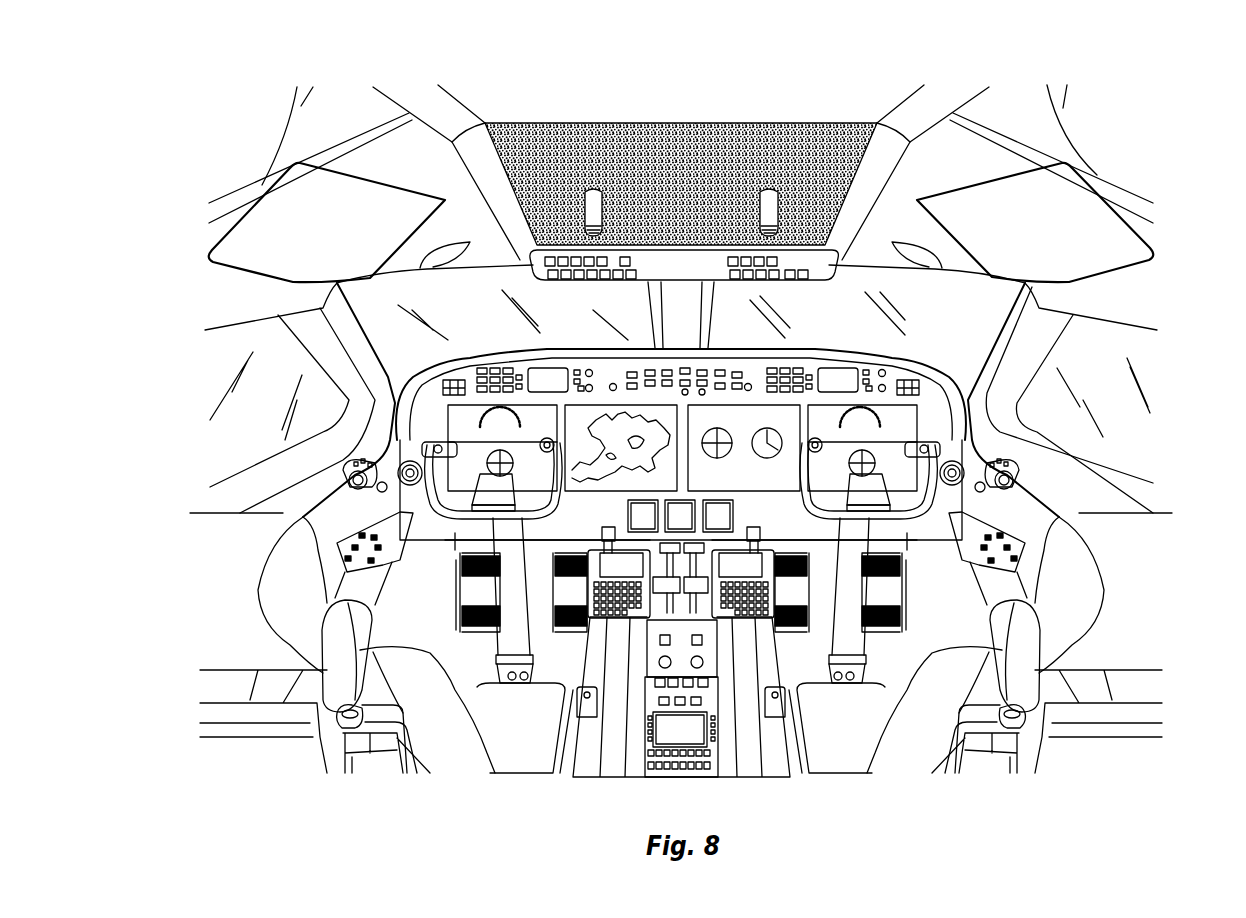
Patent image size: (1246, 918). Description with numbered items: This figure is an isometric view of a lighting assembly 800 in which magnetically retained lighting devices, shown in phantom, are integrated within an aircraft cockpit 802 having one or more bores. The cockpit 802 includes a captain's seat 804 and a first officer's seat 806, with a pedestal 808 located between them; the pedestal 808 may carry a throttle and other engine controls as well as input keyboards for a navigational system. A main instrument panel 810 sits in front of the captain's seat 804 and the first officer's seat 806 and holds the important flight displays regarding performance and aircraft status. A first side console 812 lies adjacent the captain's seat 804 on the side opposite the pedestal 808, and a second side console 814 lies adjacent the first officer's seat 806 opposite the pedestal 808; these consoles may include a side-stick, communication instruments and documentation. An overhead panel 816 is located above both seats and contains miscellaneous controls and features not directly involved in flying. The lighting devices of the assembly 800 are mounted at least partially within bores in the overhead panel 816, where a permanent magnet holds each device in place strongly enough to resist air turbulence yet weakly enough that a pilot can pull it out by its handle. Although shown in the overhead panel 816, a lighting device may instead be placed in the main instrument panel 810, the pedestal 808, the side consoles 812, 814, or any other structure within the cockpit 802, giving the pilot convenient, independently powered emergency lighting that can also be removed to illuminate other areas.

The lighting assembly 800 is at (200, 77).
The aircraft cockpit 802 is at (968, 76).
The overhead panel 816 is at (687, 158).
The main instrument panel 810 is at (610, 398).
The first side console 812 is at (350, 560).
The second side console 814 is at (1018, 540).
The captain's seat 804 is at (223, 580).
The first officer's seat 806 is at (1141, 582).
The pedestal 808 is at (618, 680).